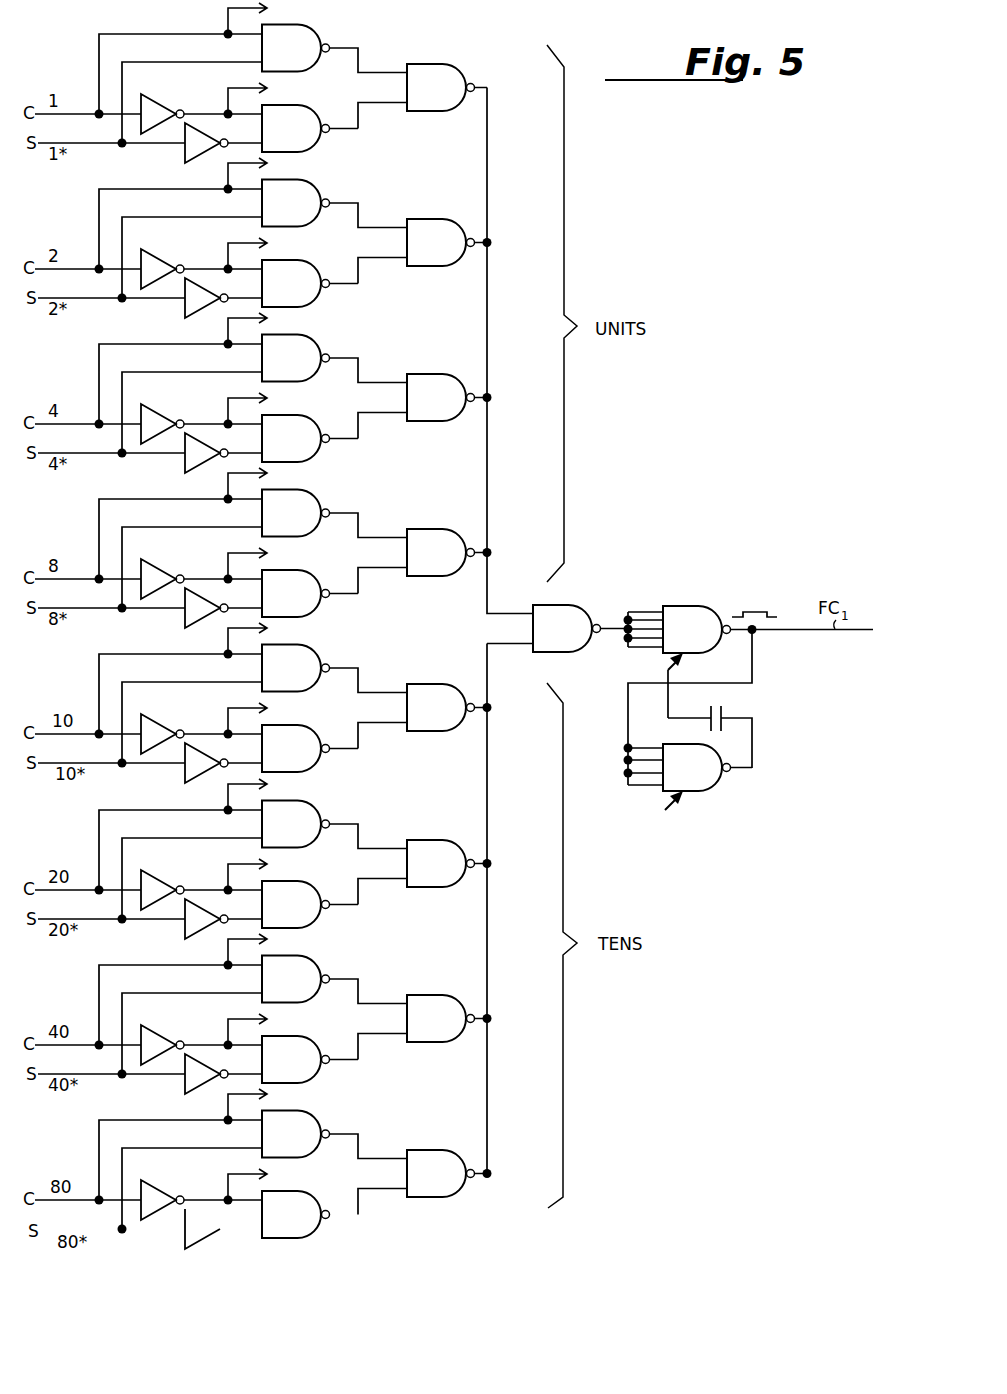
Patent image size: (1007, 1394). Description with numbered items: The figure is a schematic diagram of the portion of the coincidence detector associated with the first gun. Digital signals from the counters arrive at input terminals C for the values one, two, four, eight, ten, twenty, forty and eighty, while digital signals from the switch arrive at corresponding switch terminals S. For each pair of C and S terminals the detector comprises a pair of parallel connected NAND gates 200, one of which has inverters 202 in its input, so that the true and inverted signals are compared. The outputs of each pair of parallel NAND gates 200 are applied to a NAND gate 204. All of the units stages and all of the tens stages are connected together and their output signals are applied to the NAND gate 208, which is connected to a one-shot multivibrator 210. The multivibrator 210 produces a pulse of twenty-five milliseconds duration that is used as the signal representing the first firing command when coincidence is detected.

The NAND gates 200 is at (302, 40).
The inverters 202 is at (157, 110).
The NAND gate 204 is at (440, 78).
The NAND gate 208 is at (567, 643).
The one-shot multivibrator 210 is at (795, 714).